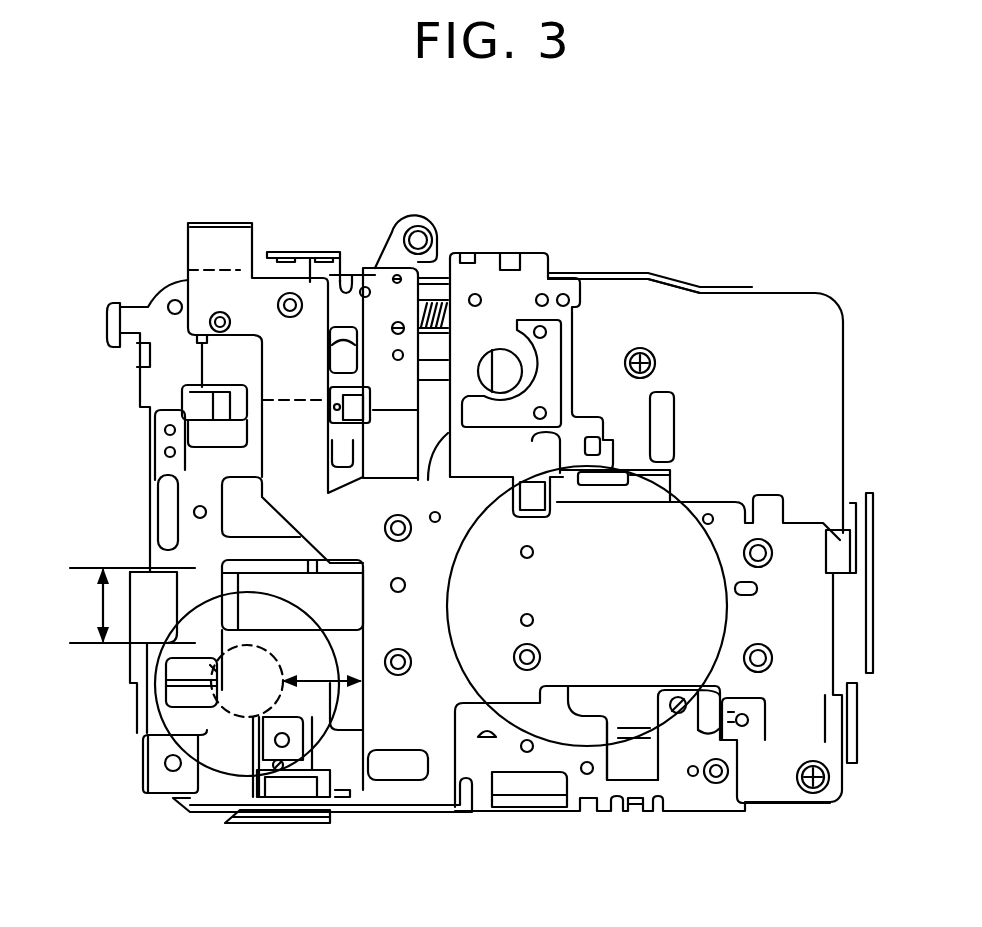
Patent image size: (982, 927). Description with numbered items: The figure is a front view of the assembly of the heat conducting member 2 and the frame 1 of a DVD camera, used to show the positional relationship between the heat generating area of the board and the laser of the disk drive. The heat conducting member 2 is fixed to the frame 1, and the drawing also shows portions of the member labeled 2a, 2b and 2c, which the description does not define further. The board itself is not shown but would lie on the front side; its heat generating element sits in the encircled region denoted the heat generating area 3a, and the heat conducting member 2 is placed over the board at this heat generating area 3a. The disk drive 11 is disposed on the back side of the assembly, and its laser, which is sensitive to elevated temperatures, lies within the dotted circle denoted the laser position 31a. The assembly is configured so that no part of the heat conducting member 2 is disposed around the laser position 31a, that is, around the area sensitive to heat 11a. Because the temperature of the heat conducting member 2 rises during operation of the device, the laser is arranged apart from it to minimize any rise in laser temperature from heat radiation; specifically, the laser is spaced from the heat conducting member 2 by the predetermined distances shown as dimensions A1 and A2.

The frame 1 is at (534, 280).
The heat conducting member 2 is at (788, 680).
The bent portion of base plate 2a is at (232, 222).
The bent portion of base plate 2b is at (437, 812).
The bent portion of base plate 2c is at (870, 493).
The heat generating area 3a is at (652, 738).
The disk drive 11 is at (690, 284).
The area sensitive to heat 11a is at (205, 780).
The laser position 31a is at (250, 704).
The dimension A1 is at (318, 690).
The dimension A2 is at (100, 607).